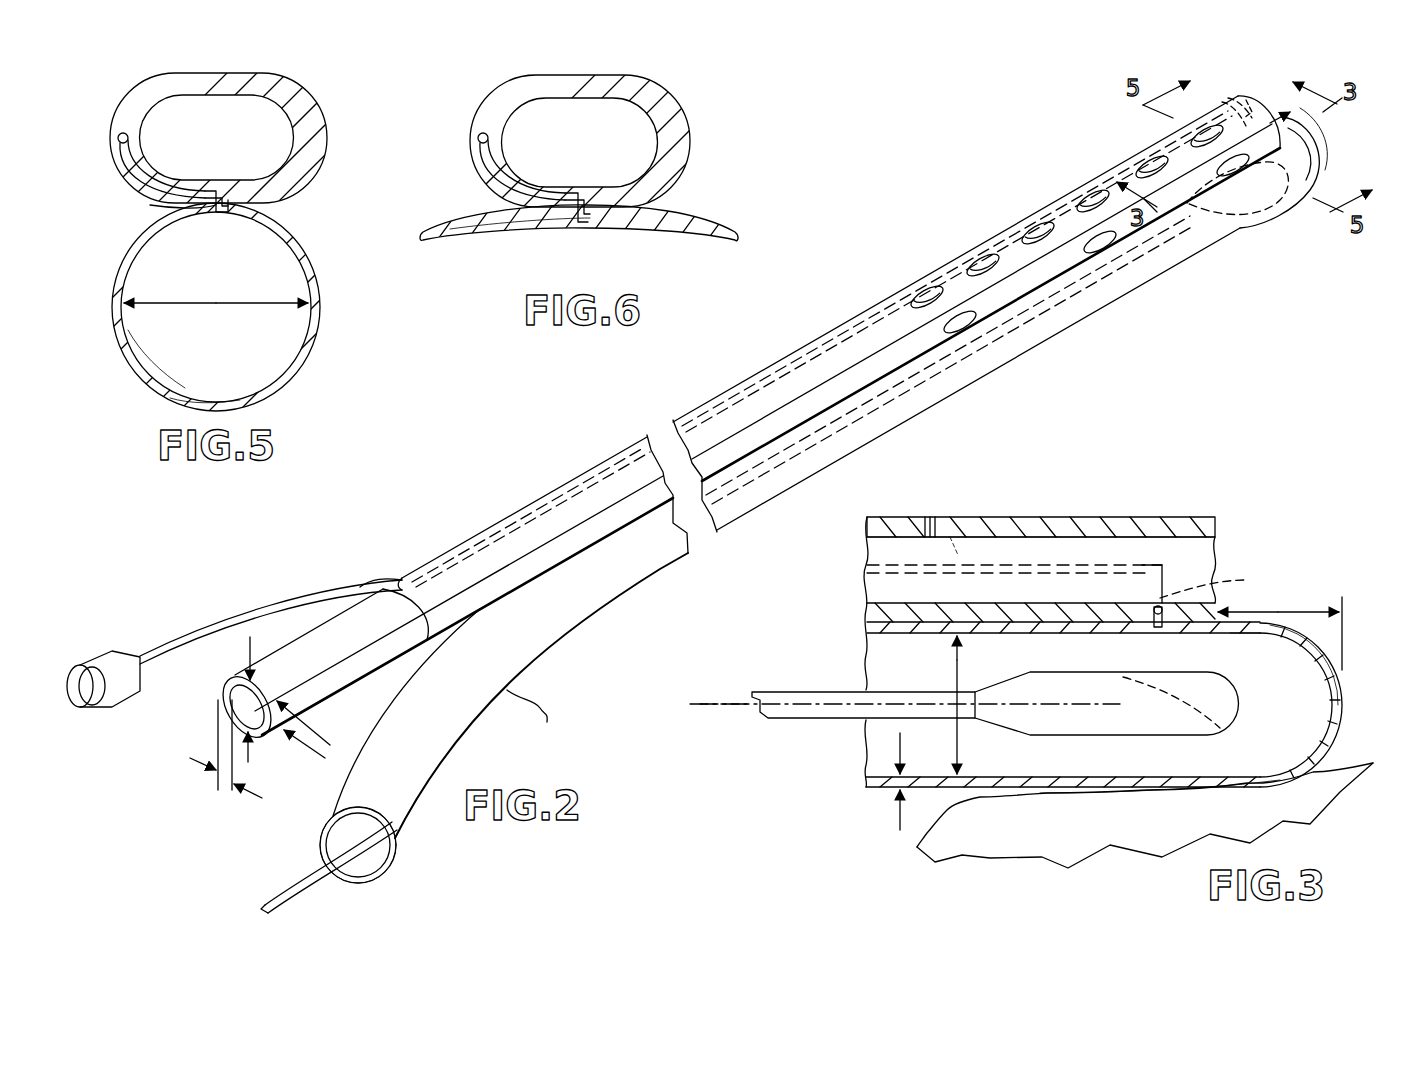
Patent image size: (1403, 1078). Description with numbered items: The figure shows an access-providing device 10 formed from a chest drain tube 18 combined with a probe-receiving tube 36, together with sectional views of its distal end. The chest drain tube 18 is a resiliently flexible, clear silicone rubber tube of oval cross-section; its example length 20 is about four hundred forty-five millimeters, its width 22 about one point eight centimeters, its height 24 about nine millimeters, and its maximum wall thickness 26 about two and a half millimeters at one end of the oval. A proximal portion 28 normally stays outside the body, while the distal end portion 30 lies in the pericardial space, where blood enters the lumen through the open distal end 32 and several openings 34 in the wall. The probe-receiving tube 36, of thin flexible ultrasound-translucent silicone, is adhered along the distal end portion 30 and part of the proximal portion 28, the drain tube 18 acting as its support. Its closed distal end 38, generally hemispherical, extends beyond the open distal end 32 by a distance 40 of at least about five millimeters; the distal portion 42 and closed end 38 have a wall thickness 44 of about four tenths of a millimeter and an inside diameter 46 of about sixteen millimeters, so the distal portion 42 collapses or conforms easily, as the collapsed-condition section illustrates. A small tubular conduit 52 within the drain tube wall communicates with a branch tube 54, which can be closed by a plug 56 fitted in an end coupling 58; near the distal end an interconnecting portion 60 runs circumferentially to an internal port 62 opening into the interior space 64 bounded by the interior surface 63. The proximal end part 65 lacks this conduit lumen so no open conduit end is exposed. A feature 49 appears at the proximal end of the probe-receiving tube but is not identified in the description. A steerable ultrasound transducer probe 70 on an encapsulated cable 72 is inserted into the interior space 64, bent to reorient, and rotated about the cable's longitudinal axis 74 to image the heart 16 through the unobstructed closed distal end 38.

In FIG. 2, the access-providing device 10 is at (806, 326).
In FIG. 3, the heart 16 is at (1344, 766).
In FIG. 2, the chest drain tube 18 is at (536, 498).
In FIG. 5, the chest drain tube 18 is at (326, 122).
In FIG. 6, the chest drain tube 18 is at (692, 126).
In FIG. 2, the length 20 is at (762, 418).
In FIG. 2, the width 22 is at (217, 688).
In FIG. 2, the height 24 is at (248, 637).
In FIG. 2, the maximum wall thickness 26 is at (190, 758).
In FIG. 2, the proximal portion 28 is at (615, 454).
In FIG. 2, the distal end portion 30 is at (1097, 172).
In FIG. 3, the distal end portion 30 is at (1020, 522).
In FIG. 2, the open distal end 32 is at (1268, 97).
In FIG. 3, the open distal end 32 is at (1198, 556).
In FIG. 2, the openings 34 is at (980, 258).
In FIG. 3, the openings 34 is at (980, 523).
In FIG. 5, the probe-receiving tube 36 is at (310, 234).
In FIG. 6, the probe-receiving tube 36 is at (673, 230).
In FIG. 2, the closed distal end 38 is at (1322, 162).
In FIG. 3, the closed distal end 38 is at (1343, 700).
In FIG. 3, the distance 40 is at (1303, 610).
In FIG. 2, the distal portion 42 is at (1110, 302).
In FIG. 3, the distal portion 42 is at (1040, 790).
In FIG. 5, the distal portion 42 is at (325, 346).
In FIG. 6, the distal portion 42 is at (484, 236).
In FIG. 3, the wall thickness 44 is at (900, 815).
In FIG. 3, the inside diameter 46 is at (957, 668).
In FIG. 5, the inside diameter 46 is at (255, 305).
In FIG. 2, the proximal opening of catheter tube 49 is at (385, 850).
In FIG. 2, the small tubular conduit 52 is at (458, 550).
In FIG. 3, the small tubular conduit 52 is at (952, 537).
In FIG. 5, the small tubular conduit 52 is at (120, 132).
In FIG. 6, the small tubular conduit 52 is at (482, 133).
In FIG. 2, the branch tube 54 is at (365, 588).
In FIG. 2, the plug 56 is at (80, 700).
In FIG. 2, the end coupling 58 is at (110, 650).
In FIG. 2, the interconnecting portion 60 is at (1250, 98).
In FIG. 3, the interconnecting portion 60 is at (1209, 584).
In FIG. 5, the interconnecting portion 60 is at (160, 173).
In FIG. 6, the interconnecting portion 60 is at (520, 176).
In FIG. 3, the internal port 62 is at (1156, 628).
In FIG. 5, the internal port 62 is at (216, 212).
In FIG. 6, the internal port 62 is at (580, 215).
In FIG. 3, the interior surface 63 is at (1262, 634).
In FIG. 5, the interior surface 63 is at (193, 392).
In FIG. 3, the interior space 64 is at (1268, 713).
In FIG. 5, the interior space 64 is at (136, 332).
In FIG. 2, the proximal end part 65 is at (296, 602).
In FIG. 2, the steerable ultrasound transducer probe 70 is at (1240, 222).
In FIG. 3, the steerable ultrasound transducer probe 70 is at (1072, 672).
In FIG. 2, the encapsulated cable 72 is at (300, 880).
In FIG. 3, the encapsulated cable 72 is at (812, 690).
In FIG. 3, the longitudinal axis 74 is at (705, 703).